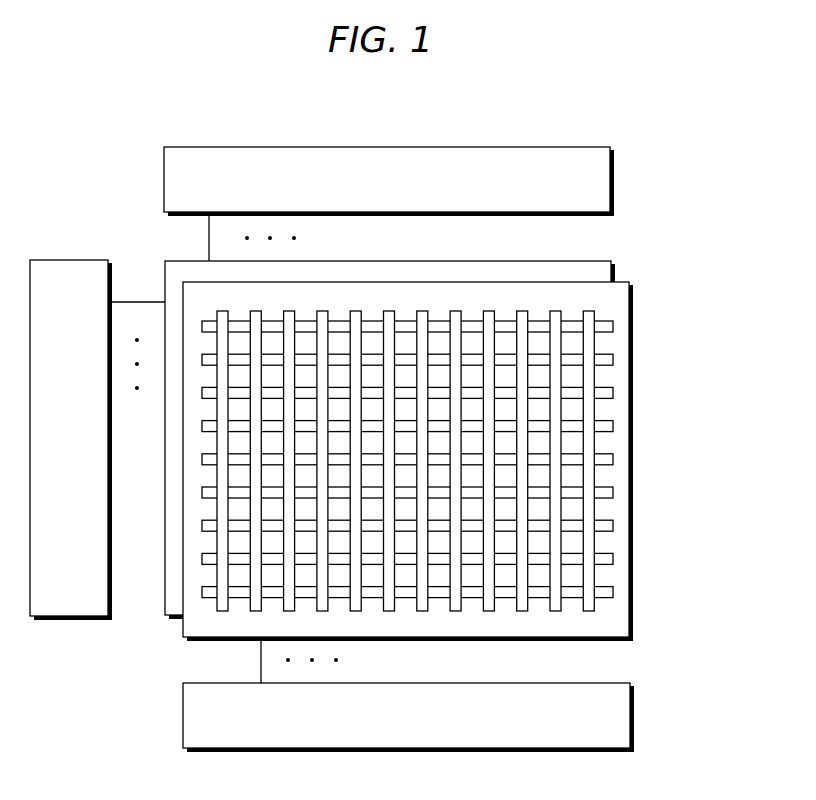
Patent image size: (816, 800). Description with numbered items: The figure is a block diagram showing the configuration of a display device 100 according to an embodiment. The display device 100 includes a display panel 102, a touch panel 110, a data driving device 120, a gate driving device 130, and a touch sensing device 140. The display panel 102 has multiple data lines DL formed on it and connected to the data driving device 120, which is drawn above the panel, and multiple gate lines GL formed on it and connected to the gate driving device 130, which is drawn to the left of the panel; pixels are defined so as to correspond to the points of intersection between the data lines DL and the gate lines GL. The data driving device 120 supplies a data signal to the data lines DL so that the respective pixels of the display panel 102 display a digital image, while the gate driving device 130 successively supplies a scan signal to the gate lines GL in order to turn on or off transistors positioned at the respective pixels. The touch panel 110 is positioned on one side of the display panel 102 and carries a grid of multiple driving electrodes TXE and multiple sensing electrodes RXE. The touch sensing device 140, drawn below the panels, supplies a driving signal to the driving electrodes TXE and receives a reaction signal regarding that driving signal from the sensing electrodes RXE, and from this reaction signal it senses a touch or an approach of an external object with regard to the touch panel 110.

The display device 100 is at (375, 449).
The display panel 102 is at (614, 268).
The touch panel 110 is at (452, 465).
The data driving device 120 is at (389, 181).
The gate driving device 130 is at (71, 440).
The touch sensing device 140 is at (408, 717).
The data lines DL is at (187, 238).
The gate lines GL is at (138, 287).
The driving electrodes TXE is at (612, 587).
The sensing electrodes RXE is at (596, 609).